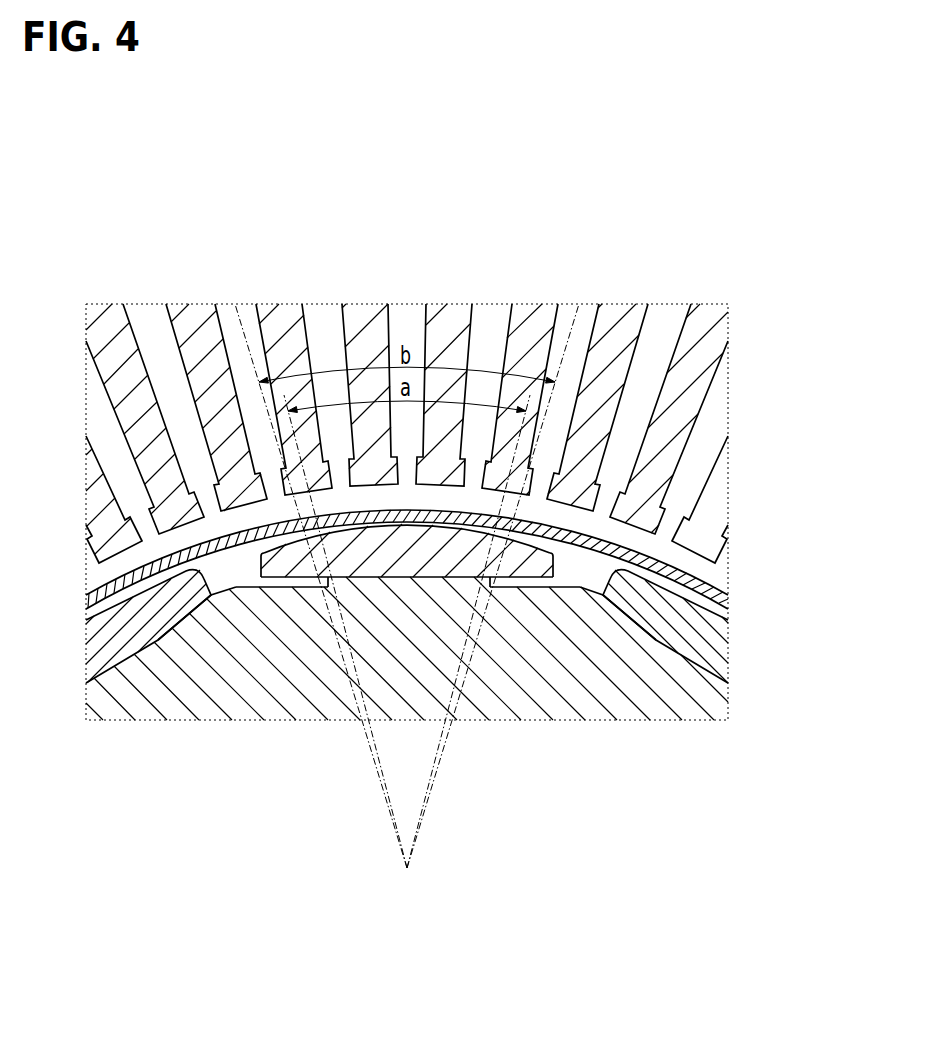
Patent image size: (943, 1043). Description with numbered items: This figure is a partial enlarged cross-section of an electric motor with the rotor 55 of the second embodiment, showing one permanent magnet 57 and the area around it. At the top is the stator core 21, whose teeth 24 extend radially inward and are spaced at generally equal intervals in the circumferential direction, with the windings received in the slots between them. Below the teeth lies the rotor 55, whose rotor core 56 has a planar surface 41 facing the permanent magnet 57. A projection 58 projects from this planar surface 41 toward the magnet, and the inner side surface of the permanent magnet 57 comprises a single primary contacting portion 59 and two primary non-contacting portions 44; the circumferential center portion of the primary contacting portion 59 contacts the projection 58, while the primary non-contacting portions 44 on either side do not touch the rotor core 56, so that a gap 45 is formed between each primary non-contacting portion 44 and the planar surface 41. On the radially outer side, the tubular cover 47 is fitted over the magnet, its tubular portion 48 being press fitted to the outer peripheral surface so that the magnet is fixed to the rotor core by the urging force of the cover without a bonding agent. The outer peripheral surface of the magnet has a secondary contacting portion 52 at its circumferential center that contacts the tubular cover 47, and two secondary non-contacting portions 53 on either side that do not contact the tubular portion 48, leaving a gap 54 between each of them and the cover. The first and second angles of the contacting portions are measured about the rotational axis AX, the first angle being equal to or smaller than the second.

The stator core 21 is at (407, 397).
The teeth 24 is at (207, 402).
The gap 54 is at (578, 478).
The permanent magnet 57 is at (387, 527).
The secondary contacting portion 52 is at (400, 527).
The secondary non-contacting portions 53 is at (260, 560).
The rotor 55 is at (127, 575).
The rotor core 56 is at (186, 690).
The tubular cover 47 is at (673, 564).
The tubular portion 48 is at (720, 600).
The primary non-contacting portions 44 is at (262, 582).
The gap 45 is at (295, 589).
The projection 58 is at (347, 580).
The primary contacting portion 59 is at (410, 580).
The planar surface 41 is at (562, 588).
The rotational axis AX is at (412, 870).